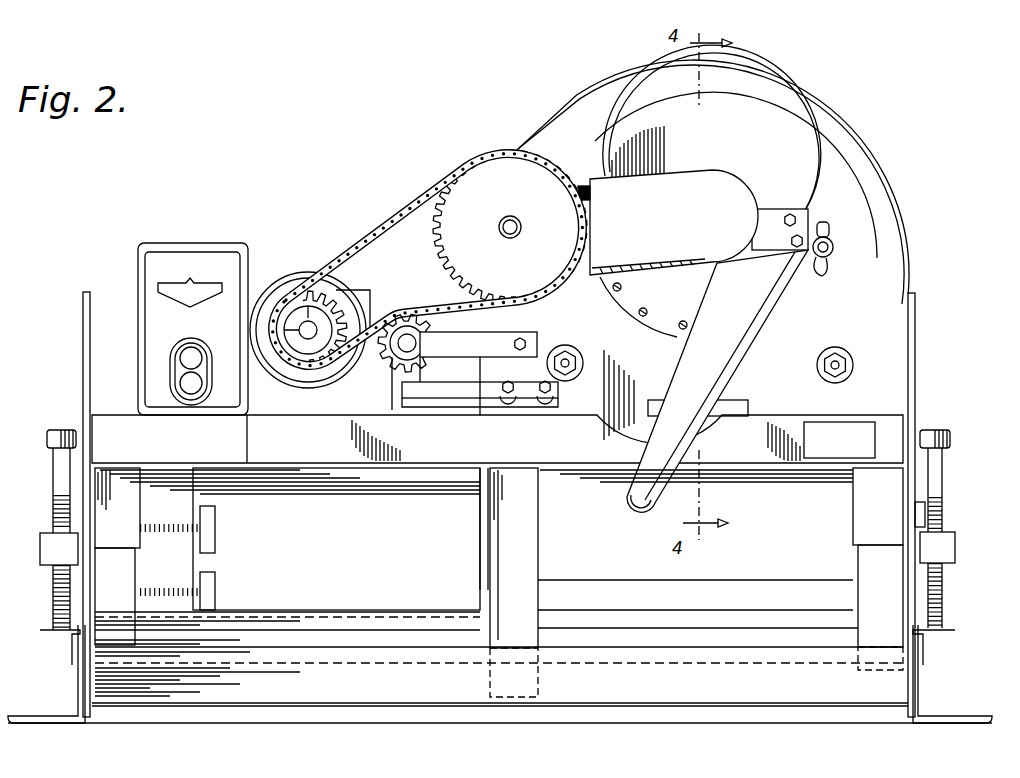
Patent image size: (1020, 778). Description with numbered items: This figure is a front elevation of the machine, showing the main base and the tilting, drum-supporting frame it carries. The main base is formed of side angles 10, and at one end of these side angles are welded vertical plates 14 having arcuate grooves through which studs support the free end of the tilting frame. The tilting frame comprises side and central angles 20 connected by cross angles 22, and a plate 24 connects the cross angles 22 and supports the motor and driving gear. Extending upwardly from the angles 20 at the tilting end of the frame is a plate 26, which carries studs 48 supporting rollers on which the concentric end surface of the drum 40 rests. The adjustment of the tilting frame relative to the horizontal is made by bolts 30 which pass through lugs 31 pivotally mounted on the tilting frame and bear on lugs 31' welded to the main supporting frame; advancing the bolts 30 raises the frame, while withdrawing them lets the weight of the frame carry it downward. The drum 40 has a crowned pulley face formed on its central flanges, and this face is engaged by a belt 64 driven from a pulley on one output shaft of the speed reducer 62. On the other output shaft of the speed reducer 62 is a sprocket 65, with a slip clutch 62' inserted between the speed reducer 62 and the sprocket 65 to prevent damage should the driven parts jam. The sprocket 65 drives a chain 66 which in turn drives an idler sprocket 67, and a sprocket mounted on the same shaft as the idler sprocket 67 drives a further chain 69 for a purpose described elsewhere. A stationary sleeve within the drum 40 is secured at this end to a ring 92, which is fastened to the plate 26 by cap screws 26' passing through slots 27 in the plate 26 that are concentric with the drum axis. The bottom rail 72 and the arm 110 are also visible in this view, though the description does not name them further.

The side angles 10 is at (78, 693).
The vertical plates 14 is at (83, 328).
The side and central angles 20 is at (110, 470).
The cross angles 22 is at (405, 463).
The plate 24 is at (336, 539).
The plate 26 is at (844, 246).
The cap screws 26' is at (816, 272).
The slots 27 is at (838, 238).
The bolts 30 is at (55, 476).
The lugs 31 is at (495, 548).
The lugs 31' is at (490, 650).
The drum 40 is at (826, 150).
The studs 48 is at (566, 352).
The speed reducer 62 is at (328, 330).
The slip clutch 62' is at (228, 328).
The belt 64 is at (628, 77).
The sprocket 65 is at (320, 297).
The chain 66 is at (397, 214).
The idler sprocket 67 is at (483, 176).
The chain 69 is at (580, 195).
The bottom rail 72 is at (335, 700).
The ring 92 is at (725, 121).
The arm 110 is at (682, 361).